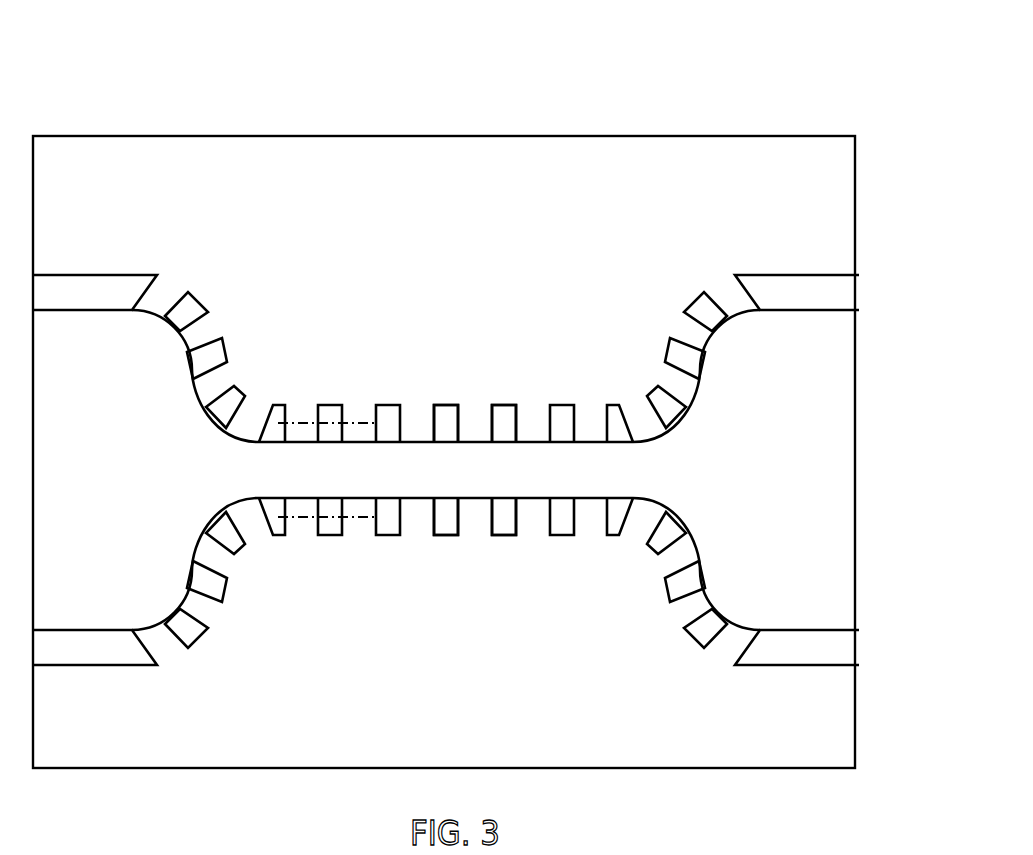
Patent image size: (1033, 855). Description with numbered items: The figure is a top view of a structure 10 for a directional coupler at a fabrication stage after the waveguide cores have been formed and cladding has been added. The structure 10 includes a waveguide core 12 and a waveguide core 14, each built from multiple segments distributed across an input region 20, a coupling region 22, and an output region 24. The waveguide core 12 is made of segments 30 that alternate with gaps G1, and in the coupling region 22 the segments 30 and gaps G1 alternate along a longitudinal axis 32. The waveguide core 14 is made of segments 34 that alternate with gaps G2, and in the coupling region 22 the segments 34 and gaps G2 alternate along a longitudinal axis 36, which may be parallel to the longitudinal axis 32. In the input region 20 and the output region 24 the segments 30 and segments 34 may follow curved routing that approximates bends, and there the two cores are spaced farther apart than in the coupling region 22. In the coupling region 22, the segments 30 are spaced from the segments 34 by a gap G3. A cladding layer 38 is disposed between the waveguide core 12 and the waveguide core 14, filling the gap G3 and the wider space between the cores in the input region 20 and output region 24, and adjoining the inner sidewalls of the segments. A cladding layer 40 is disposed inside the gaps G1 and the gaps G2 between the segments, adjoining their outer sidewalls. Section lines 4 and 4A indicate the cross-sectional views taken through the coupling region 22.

The structure 10 is at (141, 235).
The waveguide core 12 is at (732, 360).
The waveguide core 14 is at (733, 551).
The input region 20 is at (125, 85).
The coupling region 22 is at (257, 103).
The output region 24 is at (625, 85).
The segments 30 is at (497, 430).
The longitudinal axis 32 is at (300, 420).
The segments 34 is at (500, 520).
The longitudinal axis 36 is at (302, 522).
The cladding layer 38 is at (748, 476).
The cladding layer 40 is at (710, 211).
The gaps G1 is at (408, 247).
The gaps G2 is at (410, 715).
The gap G3 is at (386, 448).
The section line 4 is at (318, 331).
The section line 4A is at (517, 331).